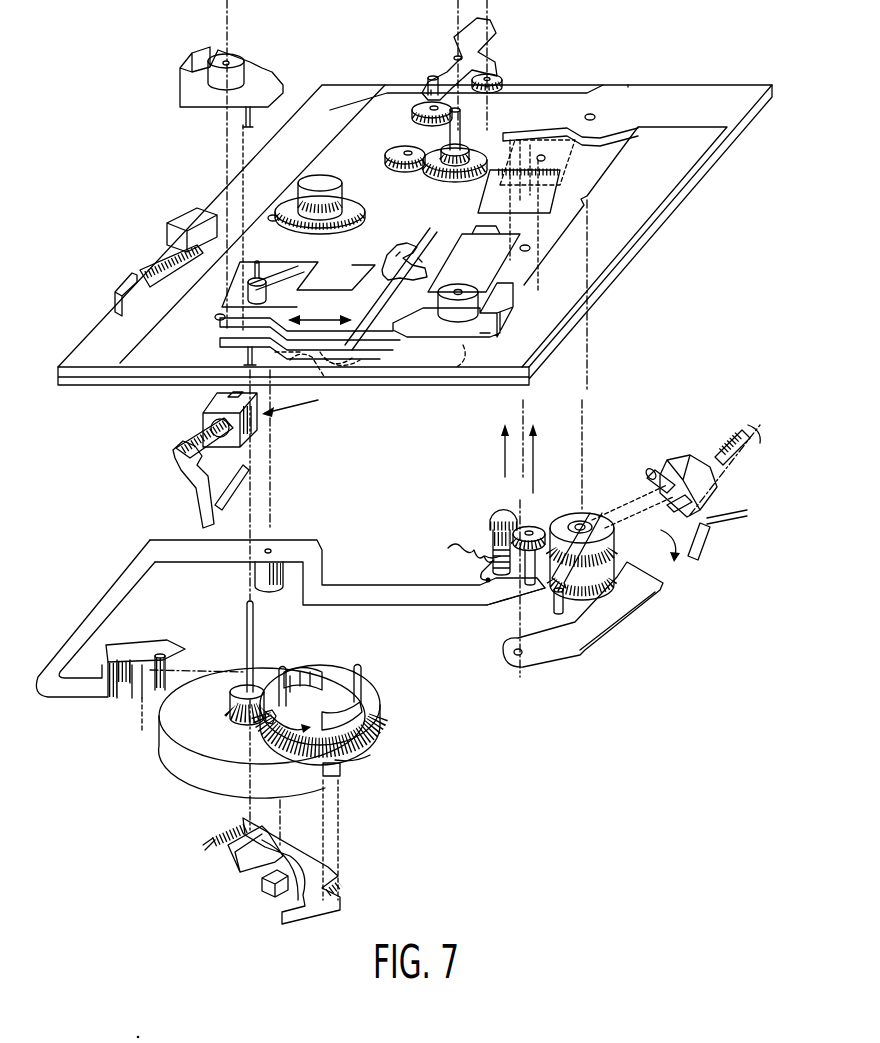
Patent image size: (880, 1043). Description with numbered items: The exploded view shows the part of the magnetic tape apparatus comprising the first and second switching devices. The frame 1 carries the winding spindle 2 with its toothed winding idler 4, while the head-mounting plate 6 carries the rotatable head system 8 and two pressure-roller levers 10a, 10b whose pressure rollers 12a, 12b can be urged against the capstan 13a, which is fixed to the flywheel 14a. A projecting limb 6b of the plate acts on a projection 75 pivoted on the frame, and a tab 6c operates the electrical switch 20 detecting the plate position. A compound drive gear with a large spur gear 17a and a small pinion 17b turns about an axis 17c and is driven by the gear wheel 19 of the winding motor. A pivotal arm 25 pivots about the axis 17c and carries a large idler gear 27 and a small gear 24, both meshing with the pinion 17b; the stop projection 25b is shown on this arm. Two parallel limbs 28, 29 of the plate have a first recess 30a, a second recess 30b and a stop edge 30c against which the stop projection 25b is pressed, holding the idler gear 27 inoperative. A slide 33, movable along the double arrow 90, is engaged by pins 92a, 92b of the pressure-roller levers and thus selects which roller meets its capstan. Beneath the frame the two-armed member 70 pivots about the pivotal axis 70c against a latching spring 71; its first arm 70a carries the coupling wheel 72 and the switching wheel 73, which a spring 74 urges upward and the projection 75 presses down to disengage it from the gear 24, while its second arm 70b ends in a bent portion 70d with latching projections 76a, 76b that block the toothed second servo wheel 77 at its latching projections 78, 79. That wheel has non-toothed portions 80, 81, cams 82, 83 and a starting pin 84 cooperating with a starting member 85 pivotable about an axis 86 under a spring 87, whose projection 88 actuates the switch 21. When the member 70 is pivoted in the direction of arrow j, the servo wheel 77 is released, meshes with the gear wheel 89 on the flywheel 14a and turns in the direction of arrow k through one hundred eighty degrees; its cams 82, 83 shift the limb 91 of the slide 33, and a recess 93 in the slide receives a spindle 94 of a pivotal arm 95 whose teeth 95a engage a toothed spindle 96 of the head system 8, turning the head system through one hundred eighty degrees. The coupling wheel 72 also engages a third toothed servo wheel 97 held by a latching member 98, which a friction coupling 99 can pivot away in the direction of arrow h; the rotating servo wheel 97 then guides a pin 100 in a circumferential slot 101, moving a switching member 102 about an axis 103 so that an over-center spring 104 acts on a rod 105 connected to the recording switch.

The frame 1 is at (628, 85).
The winding spindle 2 is at (300, 192).
The winding idler 4 is at (300, 225).
The head-mounting plate 6 is at (600, 267).
The projecting limb of the head-mounting plate 6b is at (672, 172).
The tab 6c is at (150, 262).
The head system 8 is at (295, 405).
The pressure-roller lever 10a is at (270, 85).
The pressure-roller lever 10b is at (486, 325).
The pressure roller 12a is at (232, 57).
The pressure roller 12b is at (466, 290).
The capstan 13a is at (248, 279).
The flywheel 14a is at (262, 668).
The spur gear 17a is at (470, 175).
The pinion 17b is at (440, 172).
The axis of the compound drive gear 17c is at (462, 140).
The gear wheel 19 is at (385, 157).
The electrical switch 20 is at (183, 220).
The switch 21 is at (265, 895).
The gear 24 is at (500, 72).
The pivotal arm 25 is at (428, 80).
The stop projection 25b is at (434, 72).
The idler gear 27 is at (422, 108).
The limb 28 is at (360, 283).
The limb 29 is at (448, 257).
The first recess 30a is at (385, 268).
The second recess 30b is at (398, 252).
The stop edge 30c is at (420, 258).
The slide 33 is at (385, 390).
The member 70 is at (412, 617).
The first arm 70a is at (472, 592).
The second arm 70b is at (92, 627).
The pivotal axis 70c is at (292, 522).
The bent portion 70d is at (143, 644).
The latching spring 71 is at (456, 565).
The coupling wheel 72 is at (548, 158).
The switching wheel 73 is at (520, 140).
The spring 74 is at (492, 548).
The projection 75 is at (560, 128).
The latching projection 76a is at (130, 695).
The latching projection 76b is at (158, 687).
The second servo wheel 77 is at (367, 693).
The latching projection 78 is at (360, 668).
The latching projection 79 is at (287, 666).
The non-toothed portion 80 is at (264, 720).
The non-toothed portion 81 is at (367, 720).
The cam 82 is at (312, 670).
The cam 83 is at (357, 750).
The starting pin 84 is at (337, 783).
The starting member 85 is at (288, 860).
The axis 86 is at (281, 843).
The spring 87 is at (228, 835).
The projection 88 is at (240, 858).
The gear wheel 89 is at (228, 712).
The double arrow 90 is at (326, 318).
The limb 91 is at (322, 405).
The pin 92a is at (262, 116).
The pin 92b is at (469, 381).
The recess 93 is at (343, 395).
The spindle 94 is at (245, 482).
The pivotal arm 95 is at (186, 472).
The teeth 95a is at (182, 449).
The toothed spindle 96 is at (212, 440).
The third servo wheel 97 is at (571, 513).
The latching member 98 is at (587, 633).
The friction coupling 99 is at (554, 600).
The pin 100 is at (648, 481).
The circumferential slot 101 is at (593, 600).
The switching member 102 is at (697, 455).
The axis 103 is at (673, 500).
The over-center spring 104 is at (705, 550).
The rod 105 is at (733, 518).
The arrow h is at (669, 553).
The arrow j is at (268, 595).
The arrow k is at (280, 738).